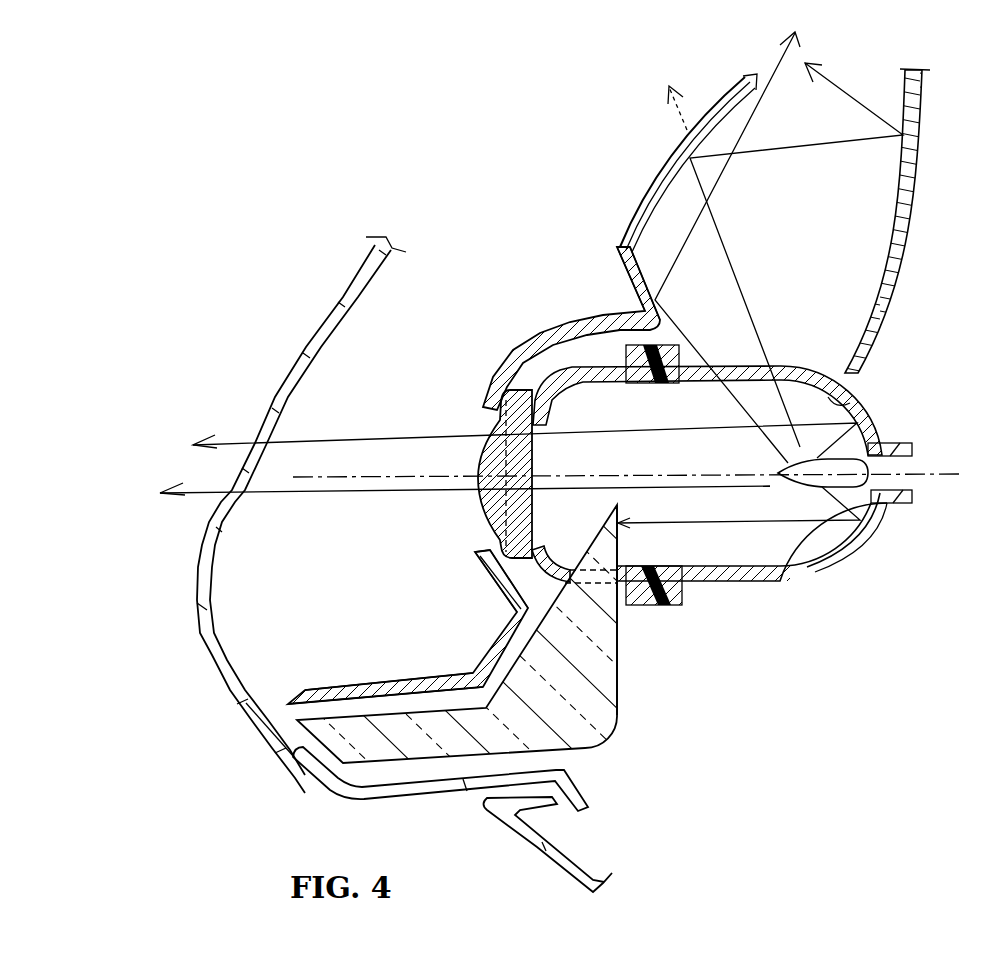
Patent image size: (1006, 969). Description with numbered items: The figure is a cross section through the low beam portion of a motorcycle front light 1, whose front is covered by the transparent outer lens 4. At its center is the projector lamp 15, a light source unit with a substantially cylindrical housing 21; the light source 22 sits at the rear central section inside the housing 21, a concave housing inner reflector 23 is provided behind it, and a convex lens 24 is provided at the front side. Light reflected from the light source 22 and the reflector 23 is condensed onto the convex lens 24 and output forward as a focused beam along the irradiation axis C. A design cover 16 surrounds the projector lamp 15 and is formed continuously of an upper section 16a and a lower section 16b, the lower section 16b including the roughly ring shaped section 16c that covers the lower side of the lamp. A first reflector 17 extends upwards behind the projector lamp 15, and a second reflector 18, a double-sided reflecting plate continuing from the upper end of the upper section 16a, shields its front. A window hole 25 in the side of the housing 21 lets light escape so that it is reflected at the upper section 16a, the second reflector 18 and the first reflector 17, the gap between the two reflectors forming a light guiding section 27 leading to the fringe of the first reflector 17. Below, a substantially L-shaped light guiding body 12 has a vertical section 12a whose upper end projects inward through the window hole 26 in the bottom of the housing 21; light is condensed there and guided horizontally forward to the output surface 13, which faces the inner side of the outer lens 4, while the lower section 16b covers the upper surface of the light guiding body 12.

The front light 1 is at (485, 240).
The outer lens 4 is at (306, 347).
The light guiding body 12 is at (603, 710).
The vertical section 12a is at (610, 643).
The output surface 13 is at (293, 753).
The projector lamp 15 is at (840, 570).
The design cover 16 is at (587, 318).
The upper section 16a is at (625, 270).
The lower section 16b is at (338, 688).
The ring shaped section 16c is at (480, 558).
The first reflector 17 is at (915, 127).
The second reflector 18 is at (652, 188).
The housing 21 is at (780, 582).
The light source 22 is at (847, 483).
The housing inner reflector 23 is at (847, 398).
The convex lens 24 is at (482, 500).
The window hole 25 is at (738, 370).
The window hole 26 is at (578, 562).
The light guiding section 27 is at (812, 277).
The irradiation axis C is at (643, 474).